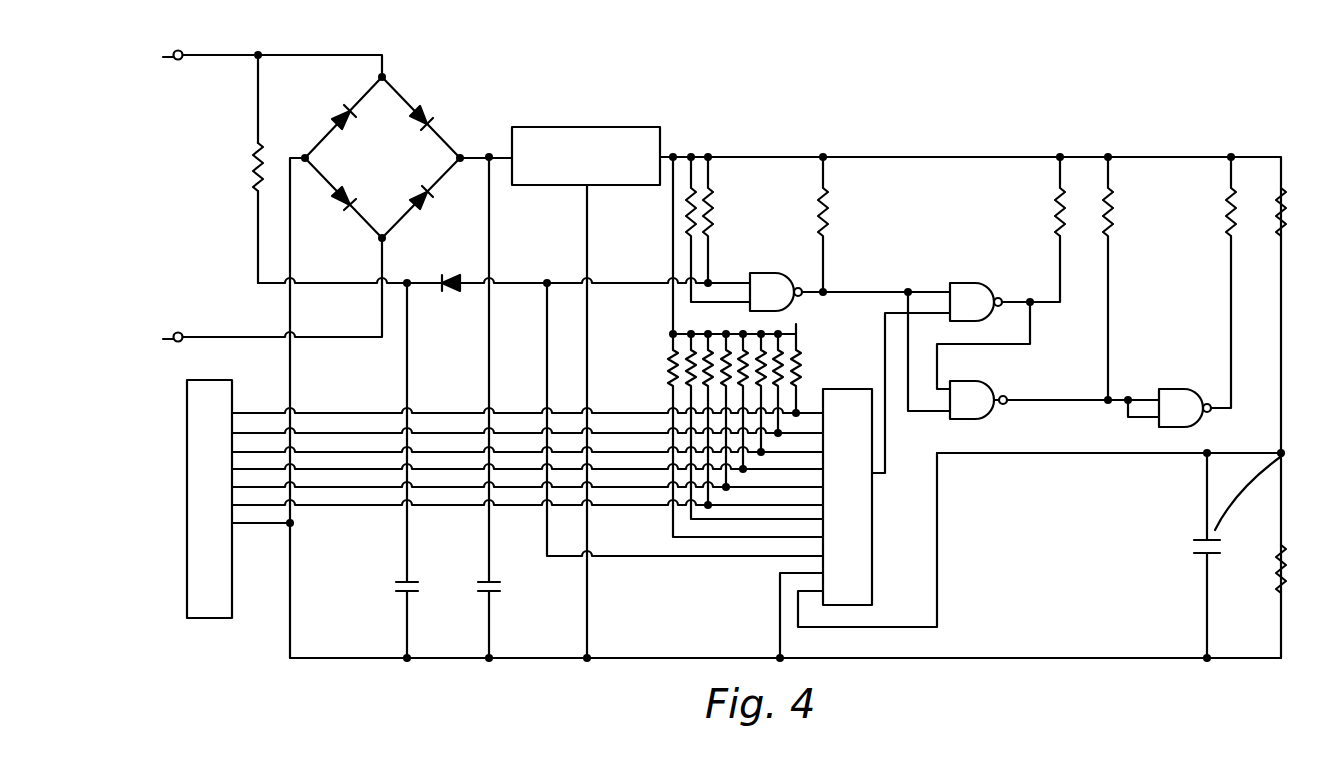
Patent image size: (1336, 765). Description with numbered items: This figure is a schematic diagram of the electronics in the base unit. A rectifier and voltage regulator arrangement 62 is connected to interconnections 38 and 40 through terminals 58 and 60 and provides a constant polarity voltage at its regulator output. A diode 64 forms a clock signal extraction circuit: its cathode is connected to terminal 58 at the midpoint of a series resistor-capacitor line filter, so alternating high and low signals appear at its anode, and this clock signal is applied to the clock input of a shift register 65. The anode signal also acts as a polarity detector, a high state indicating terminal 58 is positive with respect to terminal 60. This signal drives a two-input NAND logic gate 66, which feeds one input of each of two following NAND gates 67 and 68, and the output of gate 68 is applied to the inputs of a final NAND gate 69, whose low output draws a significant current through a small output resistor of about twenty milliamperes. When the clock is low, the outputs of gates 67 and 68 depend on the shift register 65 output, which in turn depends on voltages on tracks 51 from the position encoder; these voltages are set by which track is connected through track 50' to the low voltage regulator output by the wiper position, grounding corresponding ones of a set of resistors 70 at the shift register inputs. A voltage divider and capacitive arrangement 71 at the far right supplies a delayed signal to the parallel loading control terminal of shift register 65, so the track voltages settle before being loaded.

The interconnection 38 is at (172, 52).
The terminal 58 is at (183, 52).
The interconnection 40 is at (172, 334).
The terminal 60 is at (183, 334).
The rectifier and voltage regulator arrangement 62 is at (562, 126).
The diode 64 is at (452, 276).
The shift register 65 is at (840, 389).
The NAND logic gate 66 is at (766, 273).
The NAND gate 67 is at (962, 283).
The NAND gate 68 is at (983, 382).
The final NAND gate 69 is at (1172, 390).
The set of resistors 70 is at (796, 332).
The voltage divider and capacitive arrangement 71 is at (1288, 230).
The tracks 51 is at (272, 452).
The track 50' is at (228, 499).